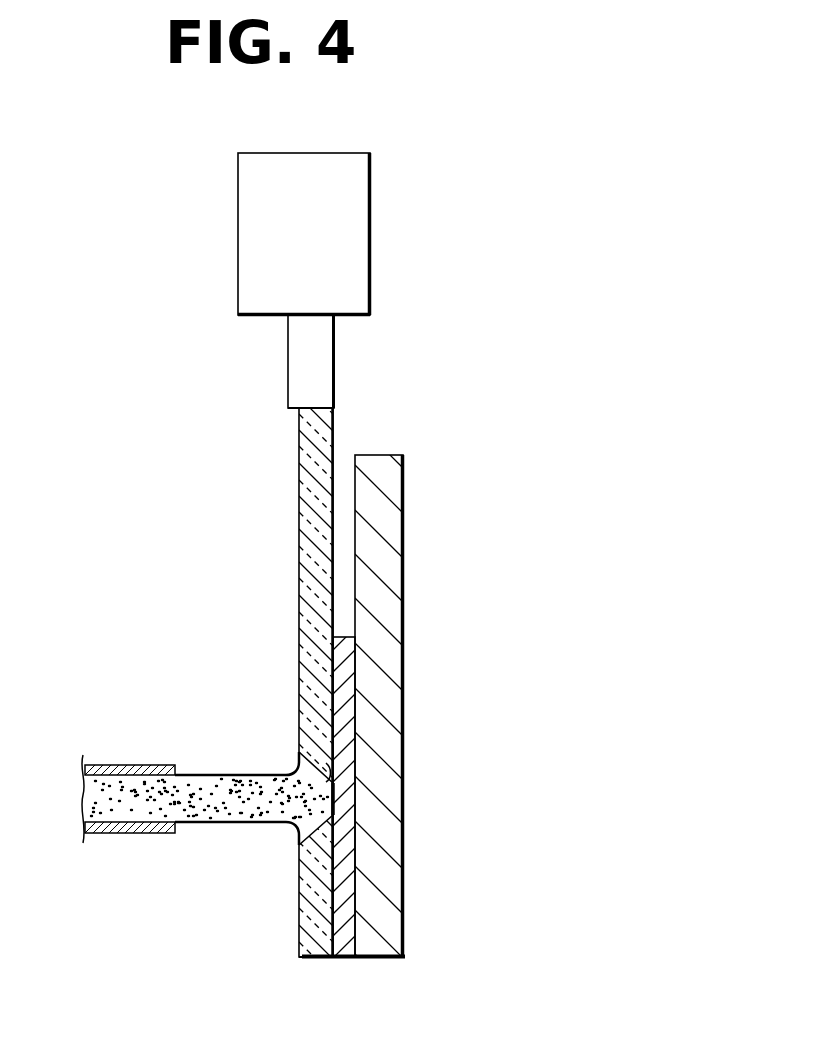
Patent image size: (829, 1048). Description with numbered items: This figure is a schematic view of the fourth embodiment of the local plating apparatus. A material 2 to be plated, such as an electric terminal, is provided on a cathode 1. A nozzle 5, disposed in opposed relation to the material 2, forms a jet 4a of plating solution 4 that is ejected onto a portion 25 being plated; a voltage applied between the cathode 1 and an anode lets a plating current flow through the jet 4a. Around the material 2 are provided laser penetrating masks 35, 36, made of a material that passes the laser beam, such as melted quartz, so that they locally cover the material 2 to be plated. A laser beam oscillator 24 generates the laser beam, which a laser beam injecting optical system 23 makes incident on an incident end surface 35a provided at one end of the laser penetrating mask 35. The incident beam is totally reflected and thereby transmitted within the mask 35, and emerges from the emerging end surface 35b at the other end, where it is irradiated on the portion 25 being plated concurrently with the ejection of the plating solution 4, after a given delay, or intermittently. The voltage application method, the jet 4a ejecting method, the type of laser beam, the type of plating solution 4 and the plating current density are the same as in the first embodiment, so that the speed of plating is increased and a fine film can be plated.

The cathode 1 is at (392, 866).
The material to be plated 2 is at (350, 958).
The plating solution 4 is at (117, 790).
The jet of plating solution 4a is at (235, 805).
The nozzle 5 is at (120, 835).
The laser beam injecting optical system 23 is at (323, 357).
The laser beam oscillator 24 is at (365, 228).
The portion being plated 25 is at (335, 800).
The laser penetrating mask 35 is at (300, 522).
The incident end surface 35a is at (300, 405).
The emerging end surface 35b is at (330, 762).
The laser penetrating mask 36 is at (303, 947).